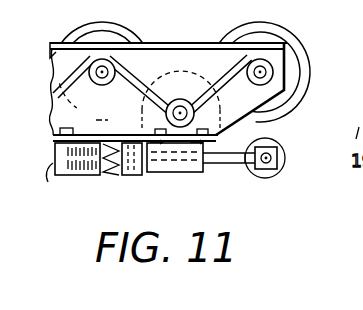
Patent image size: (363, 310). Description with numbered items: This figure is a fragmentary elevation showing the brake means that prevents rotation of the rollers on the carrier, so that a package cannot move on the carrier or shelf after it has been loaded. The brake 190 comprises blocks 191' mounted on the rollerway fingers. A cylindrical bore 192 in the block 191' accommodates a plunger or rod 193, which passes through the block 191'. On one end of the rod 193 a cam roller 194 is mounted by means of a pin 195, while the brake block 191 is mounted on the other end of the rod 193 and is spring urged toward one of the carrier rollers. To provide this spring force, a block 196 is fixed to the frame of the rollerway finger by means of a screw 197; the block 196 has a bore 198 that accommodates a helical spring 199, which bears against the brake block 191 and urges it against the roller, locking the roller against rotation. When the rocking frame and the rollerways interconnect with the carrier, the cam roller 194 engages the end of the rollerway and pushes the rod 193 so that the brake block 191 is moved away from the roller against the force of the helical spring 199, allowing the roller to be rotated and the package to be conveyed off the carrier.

The brake 190 is at (288, 168).
The brake block 191 is at (158, 100).
The block 191' is at (175, 172).
The cylindrical bore 192 is at (212, 166).
The plunger or rod 193 is at (237, 172).
The cam roller 194 is at (273, 140).
The pin 195 is at (280, 160).
The block 196 is at (54, 174).
The screw 197 is at (83, 130).
The bore 198 is at (91, 175).
The helical spring 199 is at (86, 181).